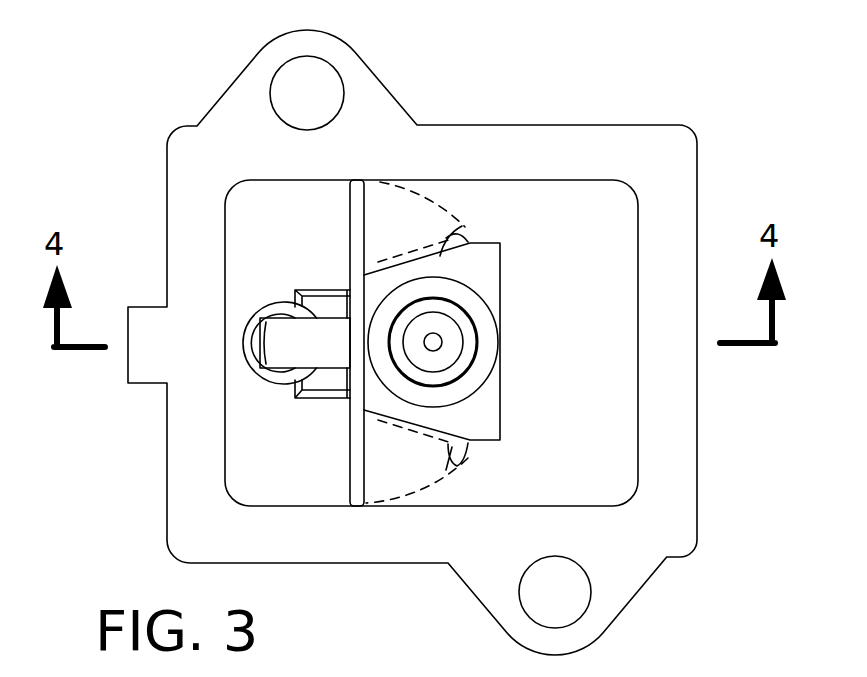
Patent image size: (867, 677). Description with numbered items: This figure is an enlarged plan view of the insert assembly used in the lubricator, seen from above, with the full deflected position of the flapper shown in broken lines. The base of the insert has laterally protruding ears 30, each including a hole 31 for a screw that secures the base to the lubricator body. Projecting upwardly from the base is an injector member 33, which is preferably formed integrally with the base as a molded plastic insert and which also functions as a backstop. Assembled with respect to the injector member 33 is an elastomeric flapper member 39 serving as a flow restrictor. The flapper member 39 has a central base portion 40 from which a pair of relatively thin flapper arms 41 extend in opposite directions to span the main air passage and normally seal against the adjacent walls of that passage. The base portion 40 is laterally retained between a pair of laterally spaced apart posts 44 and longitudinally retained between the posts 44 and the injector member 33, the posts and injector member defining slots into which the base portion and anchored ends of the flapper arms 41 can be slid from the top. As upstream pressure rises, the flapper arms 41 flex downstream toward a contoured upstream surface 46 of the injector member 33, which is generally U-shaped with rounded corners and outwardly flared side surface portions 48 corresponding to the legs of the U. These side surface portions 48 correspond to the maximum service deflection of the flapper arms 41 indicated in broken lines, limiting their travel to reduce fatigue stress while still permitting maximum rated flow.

The ears 30 is at (255, 55).
The hole 31 is at (323, 77).
The injector member 33 is at (508, 290).
The flapper member 39 is at (252, 373).
The base portion 40 is at (280, 343).
The flapper arms 41 is at (366, 216).
The posts 44 is at (325, 305).
The contoured upstream surface 46 is at (432, 445).
The side surface portions 48 is at (460, 228).